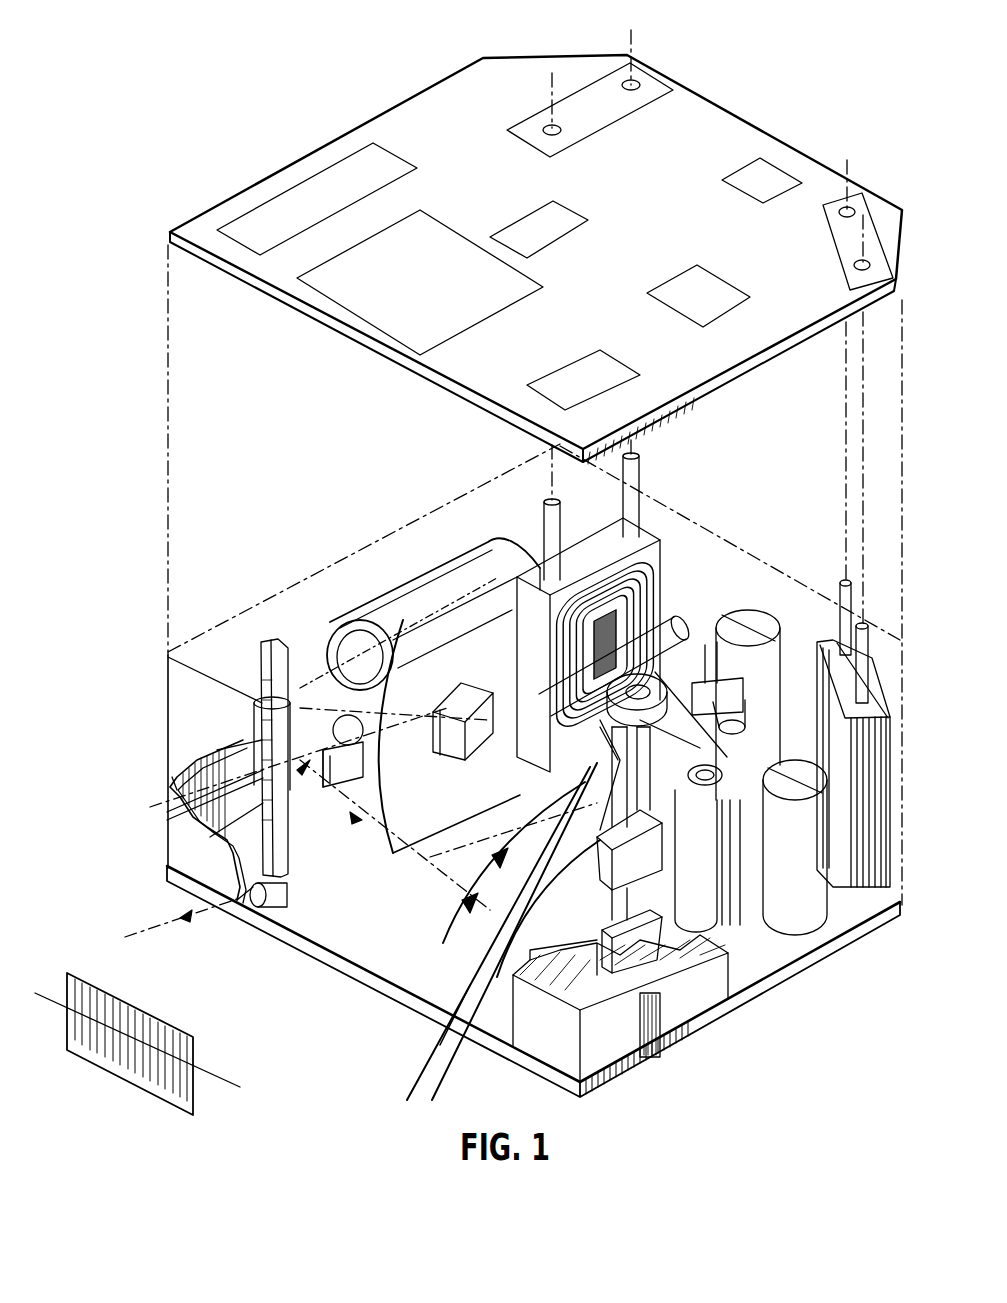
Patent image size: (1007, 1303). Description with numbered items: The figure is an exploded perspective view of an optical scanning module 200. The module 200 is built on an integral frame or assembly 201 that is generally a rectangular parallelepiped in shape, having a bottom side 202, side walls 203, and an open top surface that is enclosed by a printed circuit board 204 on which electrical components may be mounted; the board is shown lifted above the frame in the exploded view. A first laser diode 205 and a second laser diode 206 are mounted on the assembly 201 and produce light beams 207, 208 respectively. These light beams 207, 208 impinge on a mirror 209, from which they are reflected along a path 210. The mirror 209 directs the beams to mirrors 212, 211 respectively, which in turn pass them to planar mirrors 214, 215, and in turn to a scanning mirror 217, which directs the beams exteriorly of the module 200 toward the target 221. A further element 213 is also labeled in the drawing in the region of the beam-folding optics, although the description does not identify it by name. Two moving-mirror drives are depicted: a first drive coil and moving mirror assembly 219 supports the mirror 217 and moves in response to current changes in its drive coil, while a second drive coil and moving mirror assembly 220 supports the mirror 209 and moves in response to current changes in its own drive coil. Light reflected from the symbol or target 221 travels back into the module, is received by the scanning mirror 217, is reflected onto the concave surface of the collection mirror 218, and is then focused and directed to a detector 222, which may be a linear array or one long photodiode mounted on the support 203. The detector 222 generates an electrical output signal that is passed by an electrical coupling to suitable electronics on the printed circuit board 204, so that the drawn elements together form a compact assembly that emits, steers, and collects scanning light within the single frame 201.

The optical scanning module 200 is at (128, 706).
The integral frame or support or assembly 201 is at (172, 852).
The bottom side 202 is at (383, 985).
The side walls 203 is at (677, 1023).
The printed circuit board (PCB) 204 is at (750, 140).
The first laser diode 205 is at (263, 652).
The second laser diode 206 is at (355, 645).
The light beam 207 is at (338, 790).
The light beam 208 is at (307, 698).
The mirror 209 is at (178, 786).
The path 210 is at (545, 805).
The mirror 211 is at (557, 930).
The mirror 212 is at (650, 1060).
The light ray 213 is at (480, 910).
The planar mirror 214 is at (412, 690).
The planar mirror 215 is at (490, 703).
The scanning mirror 217 is at (560, 712).
The collection mirror 218 is at (412, 690).
The first drive coil and moving mirror assembly 219 is at (680, 600).
The second drive coil and moving mirror assembly 220 is at (690, 521).
The target 221 is at (197, 1110).
The detector 222 is at (480, 1030).